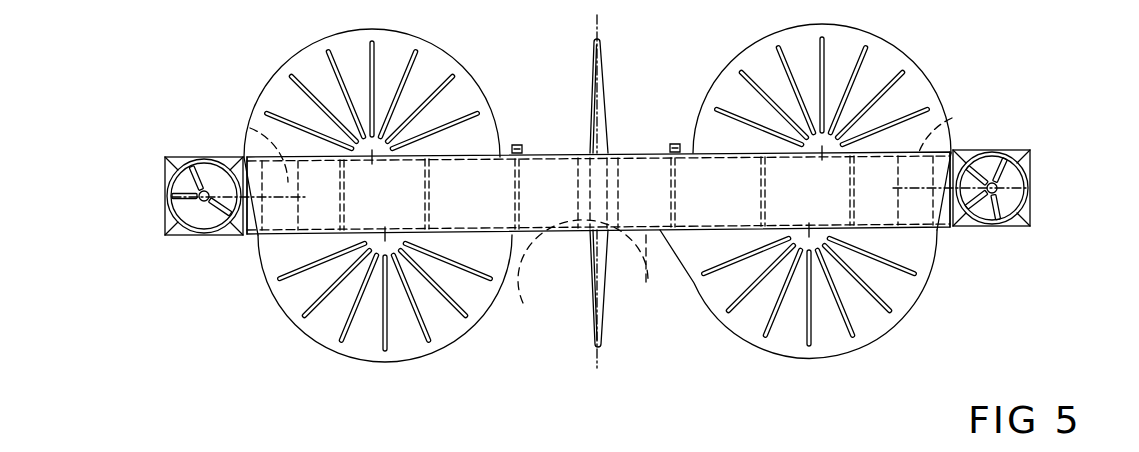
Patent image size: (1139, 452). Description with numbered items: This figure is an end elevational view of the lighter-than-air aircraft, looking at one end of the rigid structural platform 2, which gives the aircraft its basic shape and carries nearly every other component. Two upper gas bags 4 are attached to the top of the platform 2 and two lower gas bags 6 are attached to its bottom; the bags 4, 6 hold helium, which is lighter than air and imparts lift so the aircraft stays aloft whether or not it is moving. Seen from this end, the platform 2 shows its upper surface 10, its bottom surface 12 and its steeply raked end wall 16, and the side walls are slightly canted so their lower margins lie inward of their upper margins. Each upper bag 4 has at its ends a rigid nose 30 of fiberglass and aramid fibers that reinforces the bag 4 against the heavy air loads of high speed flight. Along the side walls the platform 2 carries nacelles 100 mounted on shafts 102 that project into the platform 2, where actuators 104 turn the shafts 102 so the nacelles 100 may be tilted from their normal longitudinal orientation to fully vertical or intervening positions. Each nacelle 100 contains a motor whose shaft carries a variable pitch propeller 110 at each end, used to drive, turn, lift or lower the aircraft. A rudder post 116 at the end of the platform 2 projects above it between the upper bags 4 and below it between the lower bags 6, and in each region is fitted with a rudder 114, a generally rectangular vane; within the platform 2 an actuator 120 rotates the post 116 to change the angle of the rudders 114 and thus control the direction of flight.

The structural platform 2 is at (572, 152).
The upper gas bag 4 is at (262, 92).
The lower gas bag 6 is at (317, 344).
The upper surface 10 is at (540, 153).
The bottom surface 12 is at (682, 230).
The end wall 16 is at (635, 172).
The rigid nose 30 is at (308, 72).
The nacelle 100 is at (163, 225).
The shaft 102 is at (253, 238).
The actuator 104 is at (232, 123).
The variable pitch propeller 110 is at (222, 206).
The rudder 114 is at (605, 63).
The rudder post 116 is at (643, 275).
The actuator 120 is at (583, 274).